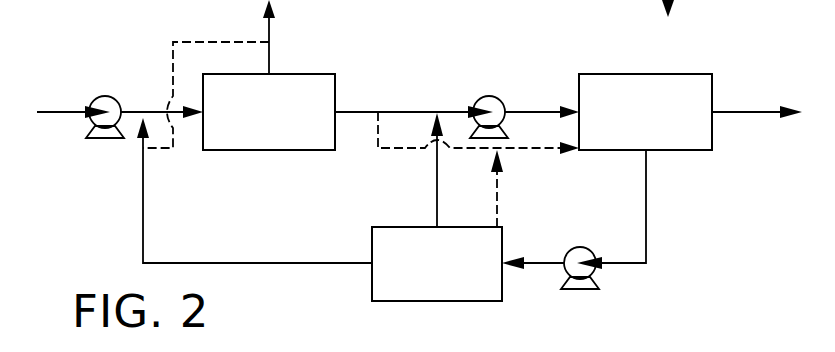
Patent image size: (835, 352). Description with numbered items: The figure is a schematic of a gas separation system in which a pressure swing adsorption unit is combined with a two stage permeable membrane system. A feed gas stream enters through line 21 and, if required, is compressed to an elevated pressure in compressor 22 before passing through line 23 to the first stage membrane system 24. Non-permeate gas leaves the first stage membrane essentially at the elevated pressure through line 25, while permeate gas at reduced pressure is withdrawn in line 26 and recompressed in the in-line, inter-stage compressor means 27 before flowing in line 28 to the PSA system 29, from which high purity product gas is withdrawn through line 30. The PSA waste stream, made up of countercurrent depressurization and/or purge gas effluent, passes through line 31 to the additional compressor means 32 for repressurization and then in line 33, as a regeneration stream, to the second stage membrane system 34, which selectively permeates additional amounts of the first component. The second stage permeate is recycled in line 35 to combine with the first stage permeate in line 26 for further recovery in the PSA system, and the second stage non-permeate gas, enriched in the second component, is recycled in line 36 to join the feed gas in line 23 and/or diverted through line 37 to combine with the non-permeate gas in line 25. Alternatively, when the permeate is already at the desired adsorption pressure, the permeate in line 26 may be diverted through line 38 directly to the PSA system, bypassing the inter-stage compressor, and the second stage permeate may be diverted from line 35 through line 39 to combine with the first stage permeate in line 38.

The feed gas line 21 is at (71, 88).
The compressor 22 is at (104, 96).
The feed line to first stage membrane 23 is at (142, 118).
The first stage membrane system 24 is at (318, 74).
The non-permeate withdrawal line 25 is at (270, 32).
The permeate line 26 is at (363, 112).
The inter-stage compressor means 27 is at (488, 97).
The PSA feed line 28 is at (535, 112).
The PSA system 29 is at (631, 74).
The product gas line 30 is at (728, 112).
The PSA waste line 31 is at (646, 217).
The additional compressor means 32 is at (580, 247).
The recycle gas line 33 is at (541, 262).
The second stage membrane system 34 is at (468, 301).
The second stage permeate recycle line 35 is at (437, 167).
The second stage non-permeate recycle line 36 is at (256, 265).
The diversion line 37 is at (236, 40).
The bypass line 38 is at (484, 152).
The second stage permeate bypass line 39 is at (520, 181).